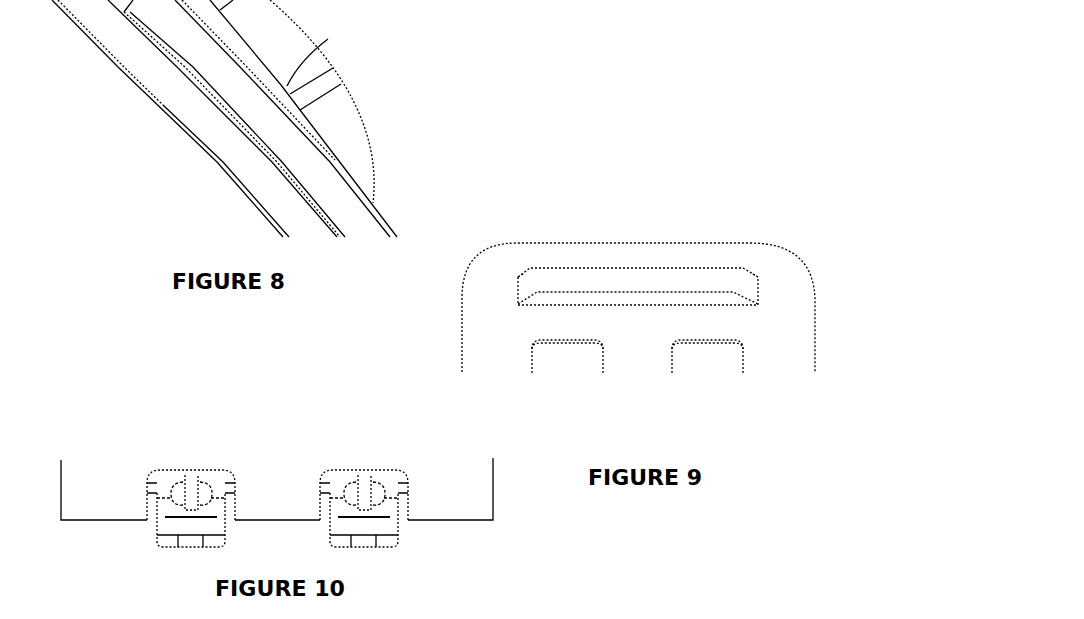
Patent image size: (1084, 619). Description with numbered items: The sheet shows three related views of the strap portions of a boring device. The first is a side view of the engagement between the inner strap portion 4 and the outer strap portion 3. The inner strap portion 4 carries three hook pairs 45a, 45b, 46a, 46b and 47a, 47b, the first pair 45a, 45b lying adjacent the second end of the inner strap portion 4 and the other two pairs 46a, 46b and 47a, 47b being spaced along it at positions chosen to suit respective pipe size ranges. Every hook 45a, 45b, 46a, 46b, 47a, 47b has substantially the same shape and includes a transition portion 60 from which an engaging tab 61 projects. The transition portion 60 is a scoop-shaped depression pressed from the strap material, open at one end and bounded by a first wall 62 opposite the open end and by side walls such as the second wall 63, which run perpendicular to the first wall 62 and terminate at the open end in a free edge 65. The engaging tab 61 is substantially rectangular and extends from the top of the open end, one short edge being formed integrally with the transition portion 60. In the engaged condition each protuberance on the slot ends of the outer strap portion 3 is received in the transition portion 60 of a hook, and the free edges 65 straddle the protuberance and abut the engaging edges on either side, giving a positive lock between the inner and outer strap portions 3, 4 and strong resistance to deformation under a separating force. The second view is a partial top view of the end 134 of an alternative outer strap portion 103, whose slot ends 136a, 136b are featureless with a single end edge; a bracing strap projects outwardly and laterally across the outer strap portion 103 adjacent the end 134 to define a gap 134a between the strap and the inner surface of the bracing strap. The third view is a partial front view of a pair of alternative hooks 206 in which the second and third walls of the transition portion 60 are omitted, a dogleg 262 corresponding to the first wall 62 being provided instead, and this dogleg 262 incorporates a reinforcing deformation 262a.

In FIG. 8, the outer strap portion 3 is at (363, 230).
In FIG. 8, the inner strap portion 4 is at (168, 110).
In FIG. 8, the transition portion 60 is at (392, 178).
In FIG. 8, the engaging tab 61 is at (282, 44).
In FIG. 8, the first wall 62 is at (367, 133).
In FIG. 8, the second wall 63 is at (349, 138).
In FIG. 8, the free edge 65 is at (323, 54).
In FIG. 8, the hook 45a is at (452, 126).
In FIG. 8, the hook 45b is at (623, 86).
In FIG. 8, the hook 46a is at (680, 86).
In FIG. 8, the hook 46b is at (574, 128).
In FIG. 8, the hook 47a is at (629, 128).
In FIG. 8, the hook 47b is at (682, 128).
In FIG. 9, the outer strap portion 103 is at (757, 167).
In FIG. 9, the end 134 is at (616, 230).
In FIG. 9, the gap 134a is at (687, 303).
In FIG. 9, the slot end 136a is at (567, 342).
In FIG. 9, the slot end 136b is at (710, 342).
In FIG. 10, the hook 206 is at (142, 548).
In FIG. 10, the dogleg 262 is at (167, 490).
In FIG. 10, the reinforcing deformation 262a is at (189, 490).